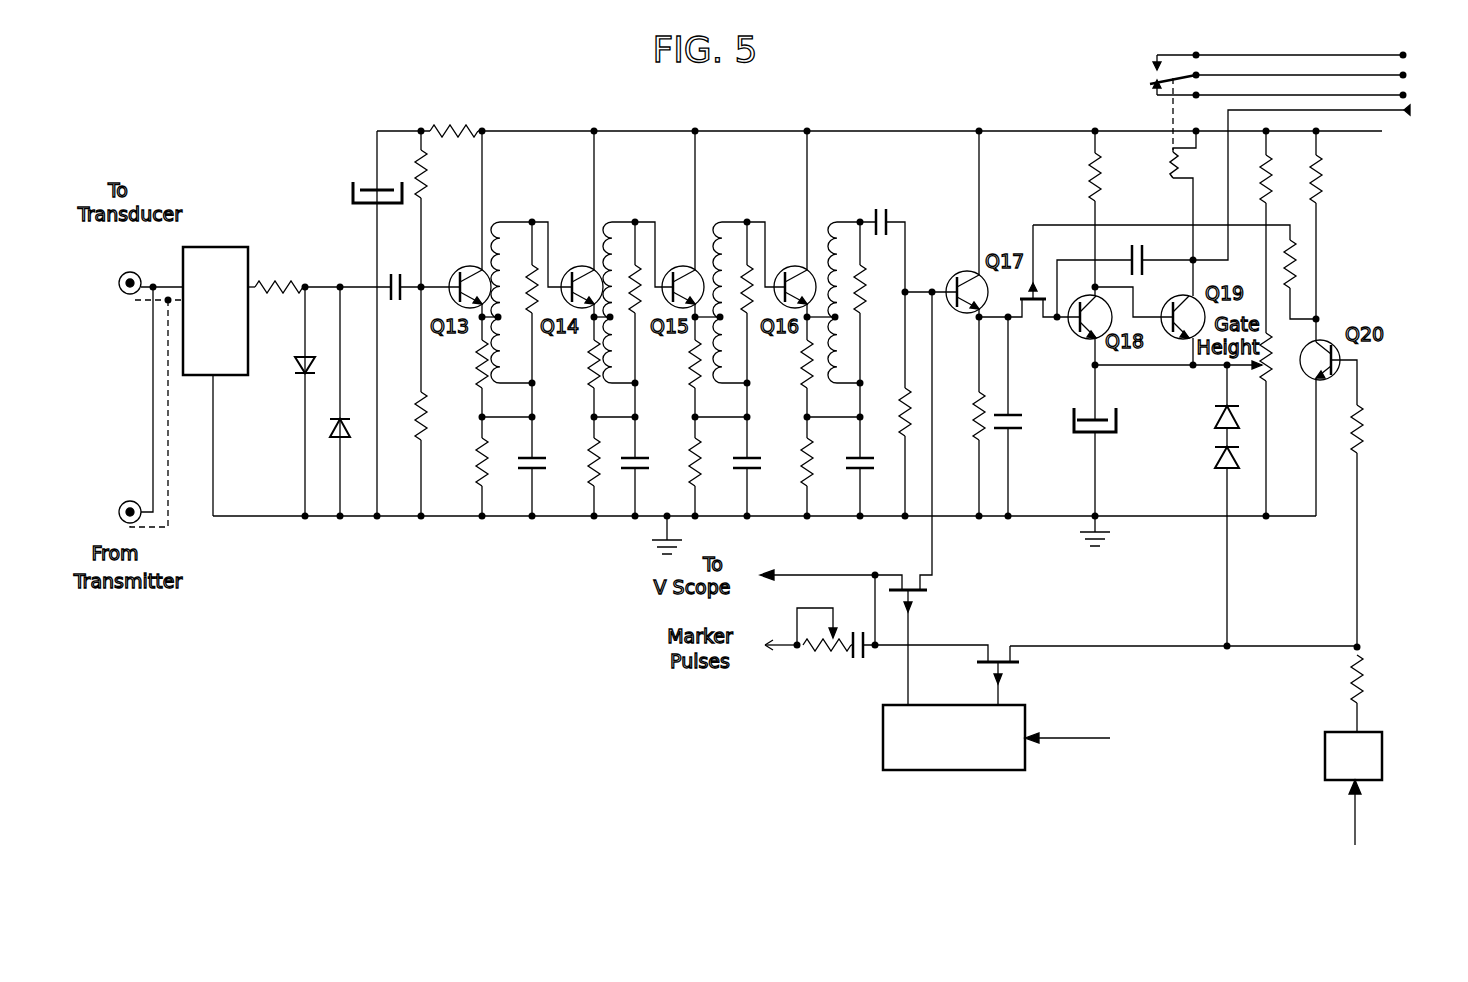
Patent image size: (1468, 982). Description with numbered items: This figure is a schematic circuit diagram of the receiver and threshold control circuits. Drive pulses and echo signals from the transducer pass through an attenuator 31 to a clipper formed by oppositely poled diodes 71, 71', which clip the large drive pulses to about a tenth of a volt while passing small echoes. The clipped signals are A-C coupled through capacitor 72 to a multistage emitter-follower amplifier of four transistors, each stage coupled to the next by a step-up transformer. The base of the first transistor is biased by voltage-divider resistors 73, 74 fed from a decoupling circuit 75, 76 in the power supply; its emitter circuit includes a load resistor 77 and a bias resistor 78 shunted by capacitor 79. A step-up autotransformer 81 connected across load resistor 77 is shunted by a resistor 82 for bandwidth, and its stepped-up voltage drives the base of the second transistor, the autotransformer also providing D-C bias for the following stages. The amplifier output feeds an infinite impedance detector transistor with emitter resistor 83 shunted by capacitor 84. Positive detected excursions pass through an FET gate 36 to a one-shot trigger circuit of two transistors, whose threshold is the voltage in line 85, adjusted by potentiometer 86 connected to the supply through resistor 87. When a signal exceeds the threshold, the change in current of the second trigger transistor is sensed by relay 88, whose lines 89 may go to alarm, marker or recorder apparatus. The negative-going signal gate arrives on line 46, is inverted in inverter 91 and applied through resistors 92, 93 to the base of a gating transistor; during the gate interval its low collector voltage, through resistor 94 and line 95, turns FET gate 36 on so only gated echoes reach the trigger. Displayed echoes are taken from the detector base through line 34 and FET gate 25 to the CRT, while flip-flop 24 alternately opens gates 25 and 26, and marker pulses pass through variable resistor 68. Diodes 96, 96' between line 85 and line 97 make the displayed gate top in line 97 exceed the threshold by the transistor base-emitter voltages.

The flip-flop 24 is at (1026, 706).
The FET gate 25 is at (913, 576).
The gate 26 is at (1000, 644).
The attenuator 31 is at (250, 252).
The line 34 is at (932, 502).
The FET gate 36 is at (1035, 312).
The line 46 is at (1352, 816).
The variable resistor 68 is at (830, 658).
The diode 71 is at (283, 401).
The diode 71' is at (306, 401).
The capacitor 72 is at (398, 302).
The voltage-divider resistor 73 is at (435, 183).
The voltage-divider resistor 74 is at (435, 409).
The decoupling resistor 75 is at (452, 126).
The decoupling capacitor 76 is at (361, 188).
The load resistor 77 is at (476, 368).
The bias resistor 78 is at (476, 468).
The capacitor 79 is at (542, 466).
The step-up autotransformer 81 is at (496, 228).
The resistor 82 is at (536, 282).
The emitter resistor 83 is at (968, 410).
The capacitor 84 is at (1020, 422).
The line 85 is at (1130, 368).
The potentiometer 86 is at (1272, 382).
The resistor 87 is at (1272, 184).
The relay 88 is at (1170, 160).
The lines 89 is at (1418, 47).
The inverter 91 is at (1325, 756).
The resistor 92 is at (1346, 688).
The resistor 93 is at (1362, 426).
The resistor 94 is at (1300, 266).
The line 95 is at (1063, 222).
The diode 96 is at (1204, 396).
The diode 96' is at (1202, 537).
The line 97 is at (1172, 641).